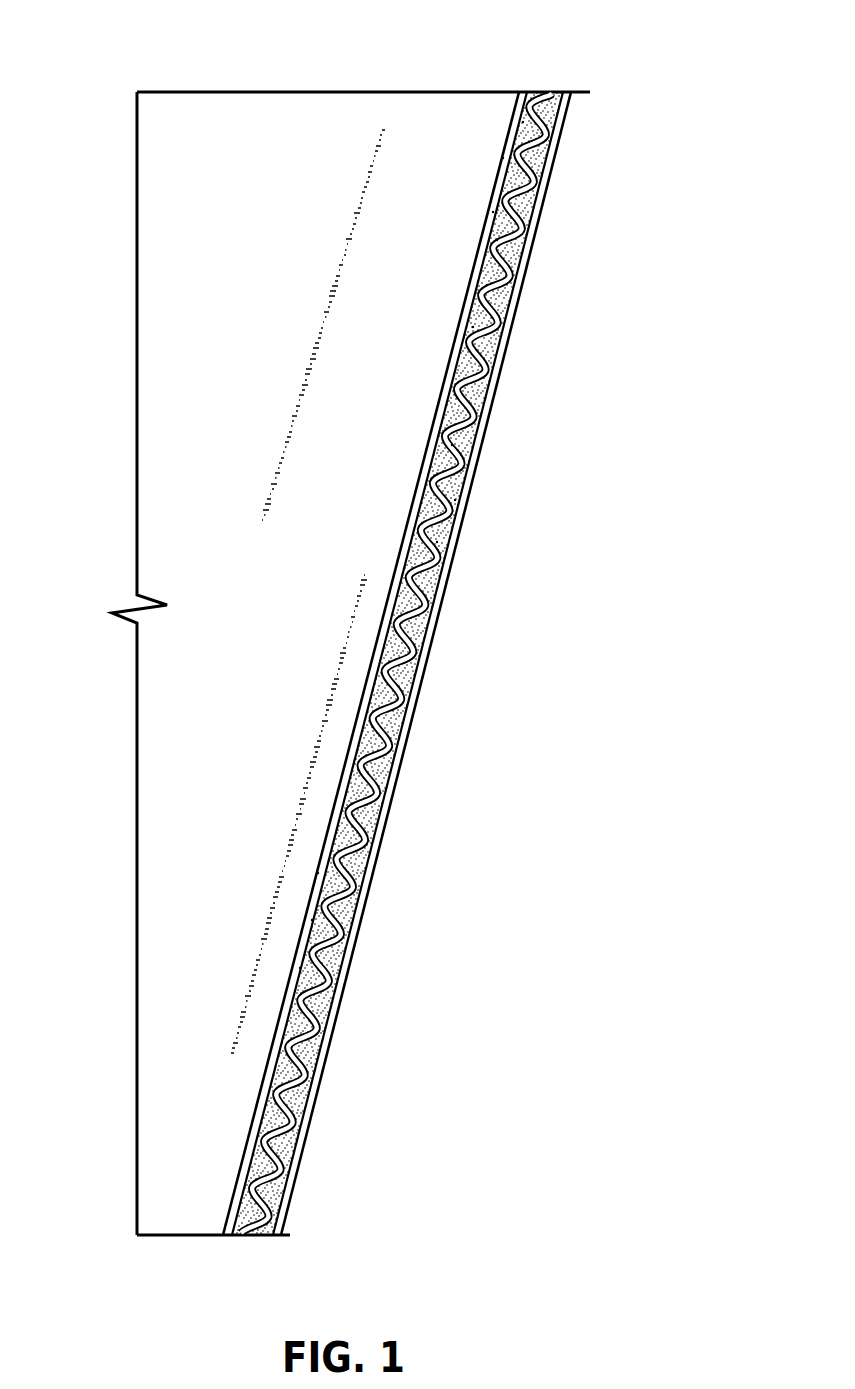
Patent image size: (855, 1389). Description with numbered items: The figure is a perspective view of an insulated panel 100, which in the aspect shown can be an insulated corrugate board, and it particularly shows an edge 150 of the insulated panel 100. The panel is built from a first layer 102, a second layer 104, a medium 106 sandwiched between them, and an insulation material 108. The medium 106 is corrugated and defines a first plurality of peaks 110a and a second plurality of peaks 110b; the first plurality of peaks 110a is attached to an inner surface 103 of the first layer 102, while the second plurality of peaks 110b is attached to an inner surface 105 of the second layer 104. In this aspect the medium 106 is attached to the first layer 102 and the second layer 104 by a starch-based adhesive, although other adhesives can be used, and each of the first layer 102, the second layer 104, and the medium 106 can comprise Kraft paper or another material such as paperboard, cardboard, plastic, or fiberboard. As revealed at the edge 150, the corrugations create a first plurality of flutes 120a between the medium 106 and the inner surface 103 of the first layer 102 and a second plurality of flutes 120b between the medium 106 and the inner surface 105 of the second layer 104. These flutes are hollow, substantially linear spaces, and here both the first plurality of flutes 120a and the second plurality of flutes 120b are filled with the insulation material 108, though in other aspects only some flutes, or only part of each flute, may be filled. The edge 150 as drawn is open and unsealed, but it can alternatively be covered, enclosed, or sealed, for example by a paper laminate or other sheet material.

The insulated panel 100 is at (306, 619).
The first layer 102 is at (170, 1043).
The inner surface 103 is at (350, 797).
The second layer 104 is at (300, 1130).
The inner surface 105 is at (367, 723).
The medium 106 is at (235, 1222).
The insulation material 108 is at (255, 1127).
The first plurality of peaks 110a is at (300, 968).
The second plurality of peaks 110b is at (437, 542).
The first plurality of flutes 120a is at (493, 212).
The second plurality of flutes 120b is at (473, 327).
The edge 150 is at (375, 684).